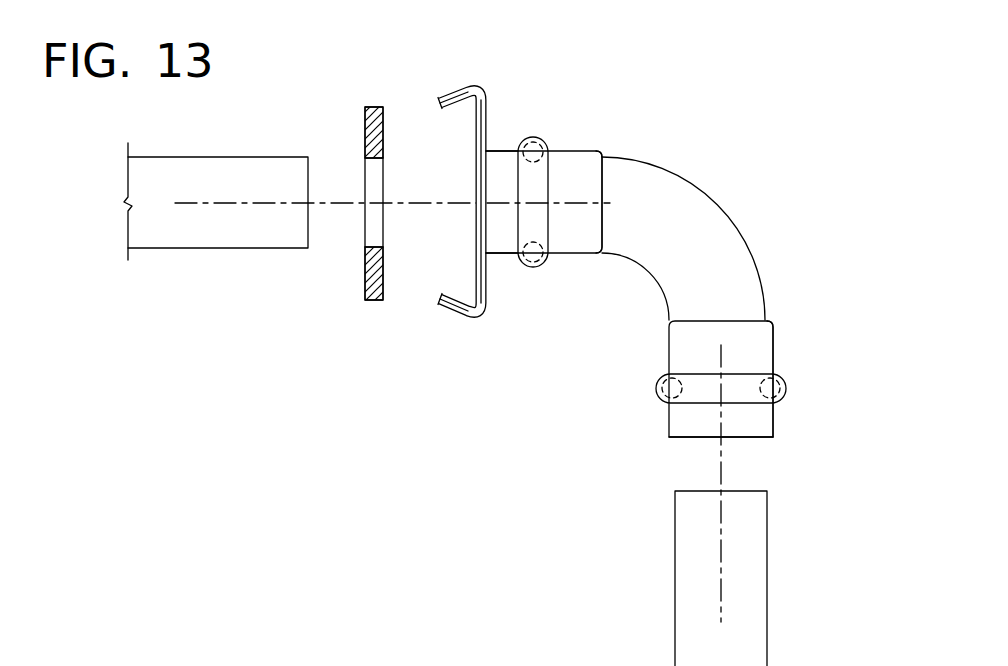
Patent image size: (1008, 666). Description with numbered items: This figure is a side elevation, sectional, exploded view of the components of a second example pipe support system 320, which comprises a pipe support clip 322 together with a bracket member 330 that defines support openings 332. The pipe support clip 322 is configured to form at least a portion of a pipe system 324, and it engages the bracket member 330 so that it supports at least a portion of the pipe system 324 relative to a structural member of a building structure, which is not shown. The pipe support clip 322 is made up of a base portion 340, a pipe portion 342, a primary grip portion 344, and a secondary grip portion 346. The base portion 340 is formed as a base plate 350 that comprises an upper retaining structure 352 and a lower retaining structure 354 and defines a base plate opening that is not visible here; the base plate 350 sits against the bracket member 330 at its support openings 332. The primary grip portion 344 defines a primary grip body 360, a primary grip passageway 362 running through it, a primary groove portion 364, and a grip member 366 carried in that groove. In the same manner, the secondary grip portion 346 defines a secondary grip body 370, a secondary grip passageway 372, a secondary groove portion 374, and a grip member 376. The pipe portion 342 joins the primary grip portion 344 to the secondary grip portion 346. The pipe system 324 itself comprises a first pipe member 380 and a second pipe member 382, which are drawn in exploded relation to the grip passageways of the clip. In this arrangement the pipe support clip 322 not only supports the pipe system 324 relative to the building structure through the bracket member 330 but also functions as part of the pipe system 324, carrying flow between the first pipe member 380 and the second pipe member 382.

The pipe support system 320 is at (718, 146).
The pipe support clip 322 is at (729, 186).
The pipe system 324 is at (275, 336).
The bracket member 330 is at (372, 106).
The support openings 332 is at (364, 170).
The base portion 340 is at (471, 90).
The pipe portion 342 is at (759, 240).
The primary grip portion 344 is at (587, 148).
The secondary grip portion 346 is at (778, 334).
The base plate 350 is at (485, 270).
The upper retaining structure 352 is at (447, 100).
The lower retaining structure 354 is at (443, 303).
The primary grip body 360 is at (571, 241).
The primary grip passageway 362 is at (497, 185).
The primary groove portion 364 is at (540, 187).
The grip member 366 is at (536, 149).
The secondary grip body 370 is at (688, 352).
The secondary grip passageway 372 is at (738, 418).
The secondary groove portion 374 is at (745, 383).
The grip member 376 is at (782, 386).
The first pipe member 380 is at (207, 230).
The second pipe member 382 is at (750, 545).